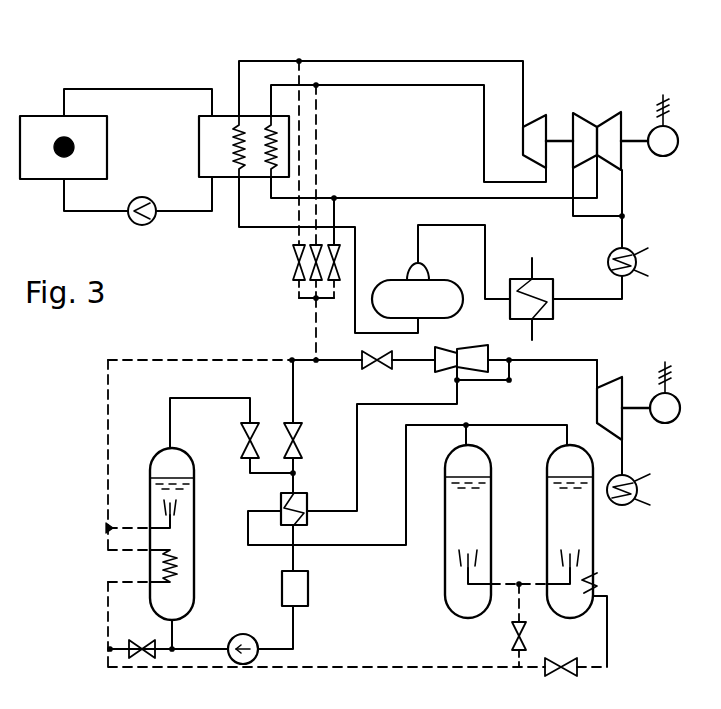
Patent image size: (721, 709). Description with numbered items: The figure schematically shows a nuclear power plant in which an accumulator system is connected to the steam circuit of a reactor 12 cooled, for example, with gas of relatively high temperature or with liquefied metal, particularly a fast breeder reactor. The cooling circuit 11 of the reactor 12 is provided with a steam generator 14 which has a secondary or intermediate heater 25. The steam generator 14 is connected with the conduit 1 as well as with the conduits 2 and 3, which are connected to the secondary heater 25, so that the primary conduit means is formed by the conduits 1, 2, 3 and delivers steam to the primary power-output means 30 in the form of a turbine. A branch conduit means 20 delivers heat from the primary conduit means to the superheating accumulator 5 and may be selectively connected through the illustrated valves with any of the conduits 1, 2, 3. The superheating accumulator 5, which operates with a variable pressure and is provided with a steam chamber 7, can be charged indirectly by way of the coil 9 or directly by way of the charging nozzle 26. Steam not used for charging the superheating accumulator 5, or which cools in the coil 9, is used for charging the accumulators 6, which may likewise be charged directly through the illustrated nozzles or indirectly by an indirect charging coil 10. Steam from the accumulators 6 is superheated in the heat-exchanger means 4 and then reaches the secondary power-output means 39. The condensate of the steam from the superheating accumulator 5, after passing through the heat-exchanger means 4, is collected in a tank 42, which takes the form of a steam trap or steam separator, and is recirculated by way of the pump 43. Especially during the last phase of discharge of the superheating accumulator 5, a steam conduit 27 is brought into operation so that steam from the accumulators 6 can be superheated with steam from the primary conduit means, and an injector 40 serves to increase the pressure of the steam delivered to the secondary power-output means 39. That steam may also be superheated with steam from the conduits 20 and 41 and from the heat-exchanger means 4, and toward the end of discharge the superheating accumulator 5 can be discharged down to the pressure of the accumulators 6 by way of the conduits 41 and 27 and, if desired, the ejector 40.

The conduit 1 is at (345, 48).
The conduit 2 is at (362, 85).
The conduit 3 is at (363, 198).
The heat-exchanger means 4 is at (302, 498).
The superheating accumulator 5 is at (185, 492).
The accumulators 6 is at (570, 500).
The steam chamber 7 is at (157, 475).
The coil 9 is at (177, 563).
The indirect charging coil 10 is at (598, 575).
The cooling circuit 11 is at (140, 85).
The reactor 12 is at (55, 167).
The steam generator 14 is at (217, 128).
The branch conduit means 20 is at (315, 333).
The secondary heater 25 is at (261, 128).
The charging nozzle 26 is at (167, 510).
The steam conduit 27 is at (348, 362).
The primary power-output means 30 is at (540, 130).
The secondary power-output means 39 is at (614, 406).
The injector 40 is at (466, 356).
The conduit 41 is at (303, 462).
The tank 42 is at (298, 598).
The pump 43 is at (243, 641).